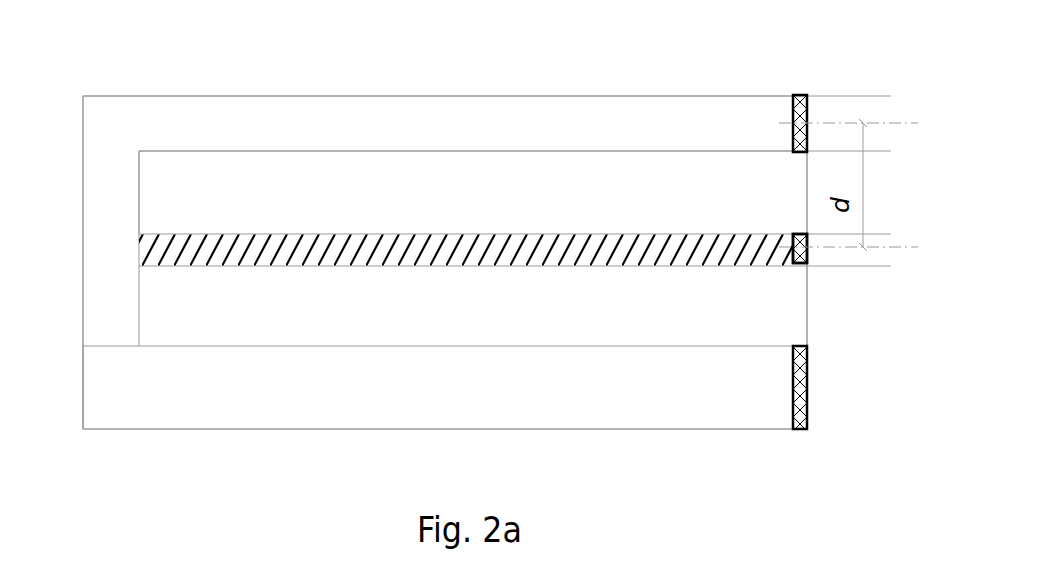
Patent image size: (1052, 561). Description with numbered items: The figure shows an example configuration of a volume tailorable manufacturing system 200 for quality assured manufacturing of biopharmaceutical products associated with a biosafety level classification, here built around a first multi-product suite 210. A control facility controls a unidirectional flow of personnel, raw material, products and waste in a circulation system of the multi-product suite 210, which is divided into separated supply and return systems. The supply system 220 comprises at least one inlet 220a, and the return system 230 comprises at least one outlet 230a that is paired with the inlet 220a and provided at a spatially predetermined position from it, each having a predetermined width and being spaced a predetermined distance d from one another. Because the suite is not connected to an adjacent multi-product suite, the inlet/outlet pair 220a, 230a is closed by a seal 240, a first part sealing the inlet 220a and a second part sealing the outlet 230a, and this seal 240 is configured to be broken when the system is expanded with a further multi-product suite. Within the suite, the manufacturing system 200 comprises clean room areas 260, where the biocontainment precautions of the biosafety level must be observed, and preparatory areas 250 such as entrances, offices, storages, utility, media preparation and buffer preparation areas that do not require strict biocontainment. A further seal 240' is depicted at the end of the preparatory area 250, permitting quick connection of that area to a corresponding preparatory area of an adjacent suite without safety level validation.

The volume tailorable manufacturing system 200 is at (550, 57).
The first multi-product suite 210 is at (417, 96).
The supply system 220 is at (167, 235).
The inlet 220a is at (810, 247).
The return system 230 is at (250, 113).
The outlet 230a is at (807, 95).
The seal 240 is at (798, 270).
The seal 240' is at (852, 394).
The preparatory areas 250 is at (170, 409).
The clean room areas 260 is at (473, 192).